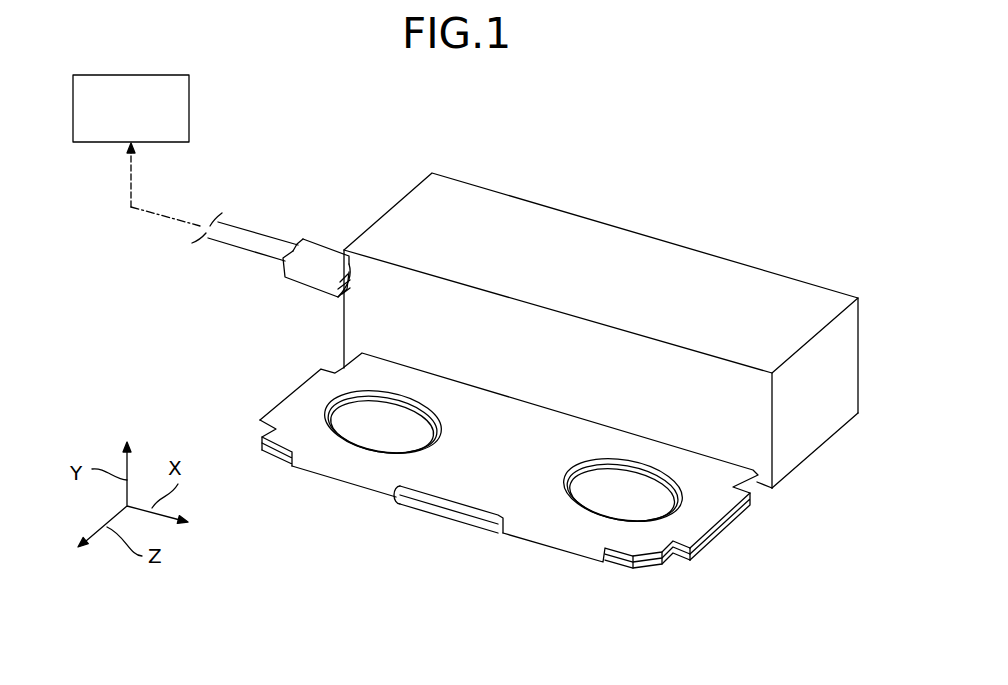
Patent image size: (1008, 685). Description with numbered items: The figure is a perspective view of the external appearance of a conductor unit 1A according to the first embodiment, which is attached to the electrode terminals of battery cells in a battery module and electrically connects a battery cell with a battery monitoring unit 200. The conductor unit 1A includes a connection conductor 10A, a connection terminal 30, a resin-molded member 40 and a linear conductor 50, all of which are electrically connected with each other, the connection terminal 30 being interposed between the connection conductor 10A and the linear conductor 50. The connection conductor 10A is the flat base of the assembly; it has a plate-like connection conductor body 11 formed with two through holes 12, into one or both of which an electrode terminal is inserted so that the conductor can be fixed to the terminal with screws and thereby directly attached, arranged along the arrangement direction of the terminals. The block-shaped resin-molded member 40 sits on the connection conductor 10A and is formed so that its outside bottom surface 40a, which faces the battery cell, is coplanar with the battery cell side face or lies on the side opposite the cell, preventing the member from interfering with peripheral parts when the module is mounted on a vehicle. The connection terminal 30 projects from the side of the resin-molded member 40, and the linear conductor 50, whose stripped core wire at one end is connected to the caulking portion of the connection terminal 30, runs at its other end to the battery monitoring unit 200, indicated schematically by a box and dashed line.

The conductor unit 1A is at (555, 356).
The battery monitoring unit 200 is at (193, 95).
The linear conductor 50 is at (255, 230).
The connection terminal 30 is at (326, 236).
The resin-molded member 40 is at (601, 362).
The outside bottom surface 40a is at (821, 460).
The connection conductor 10A is at (529, 482).
The connection conductor body 11 is at (485, 475).
The through holes 12 is at (356, 438).